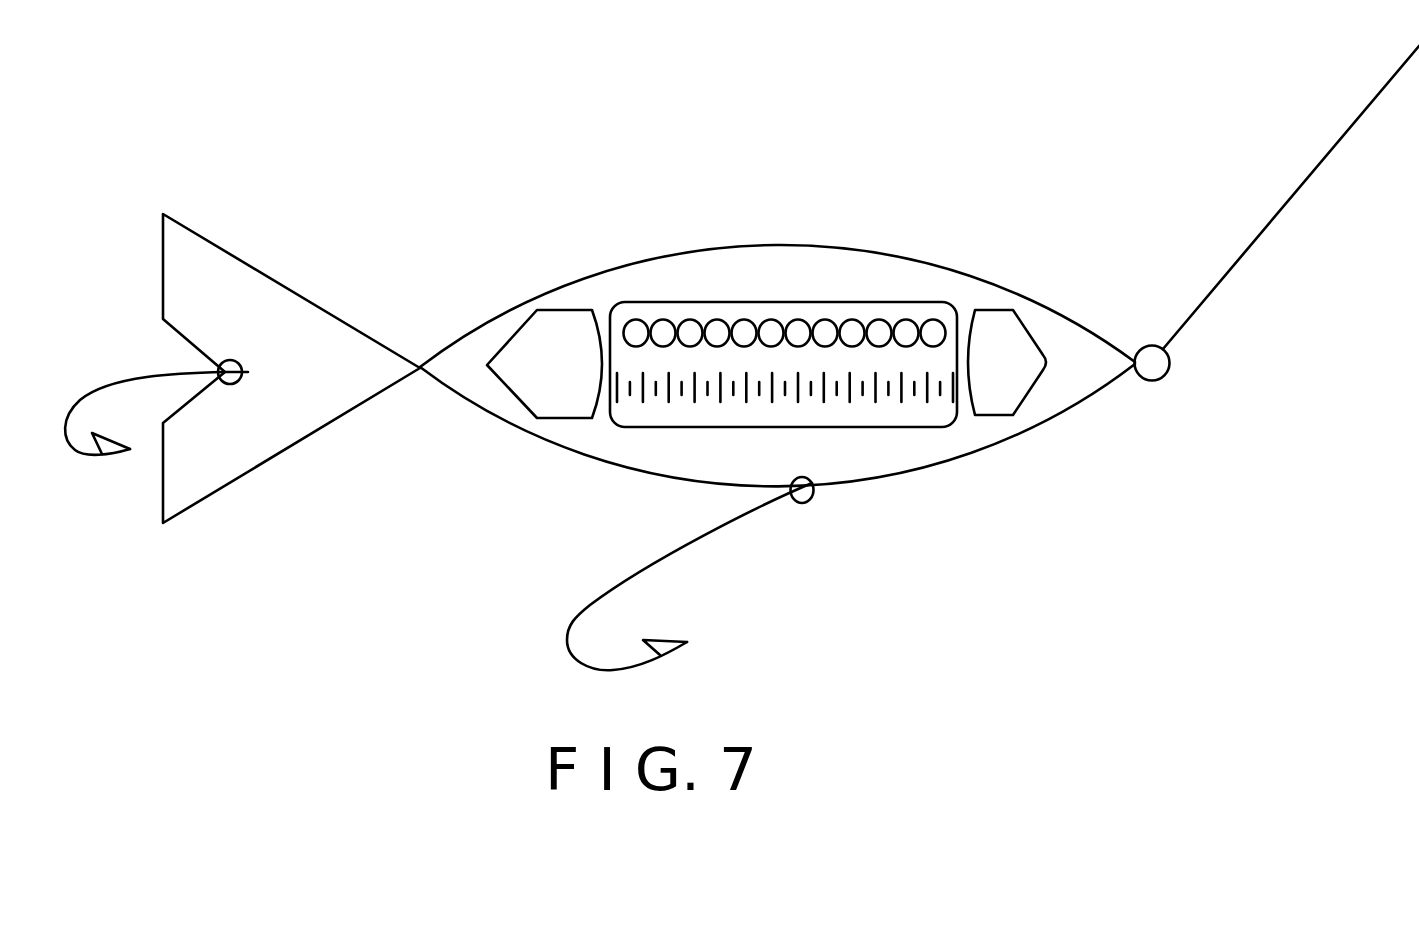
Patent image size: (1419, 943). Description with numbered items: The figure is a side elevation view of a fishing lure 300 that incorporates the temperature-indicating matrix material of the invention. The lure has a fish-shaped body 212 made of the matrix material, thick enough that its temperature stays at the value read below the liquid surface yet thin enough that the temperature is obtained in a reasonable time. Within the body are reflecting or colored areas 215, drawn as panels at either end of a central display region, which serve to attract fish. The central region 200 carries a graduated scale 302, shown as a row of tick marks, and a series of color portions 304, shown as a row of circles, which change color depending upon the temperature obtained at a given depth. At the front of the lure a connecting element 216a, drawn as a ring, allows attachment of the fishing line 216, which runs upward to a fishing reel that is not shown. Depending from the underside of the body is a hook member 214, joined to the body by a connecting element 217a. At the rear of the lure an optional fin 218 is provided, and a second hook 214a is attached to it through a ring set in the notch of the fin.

The fishing lure 300 is at (714, 180).
The lure body 212 is at (758, 270).
The fin 218 is at (208, 261).
The reflecting or colored areas 215 is at (542, 347).
The display housing 200 is at (892, 309).
The color portions 304 is at (838, 320).
The graduated scale 302 is at (895, 398).
The fishing line 216 is at (1312, 185).
The connecting element 216a is at (1170, 371).
The connecting element 217a is at (811, 503).
The hook member 214 is at (562, 630).
The second hook 214a is at (93, 457).